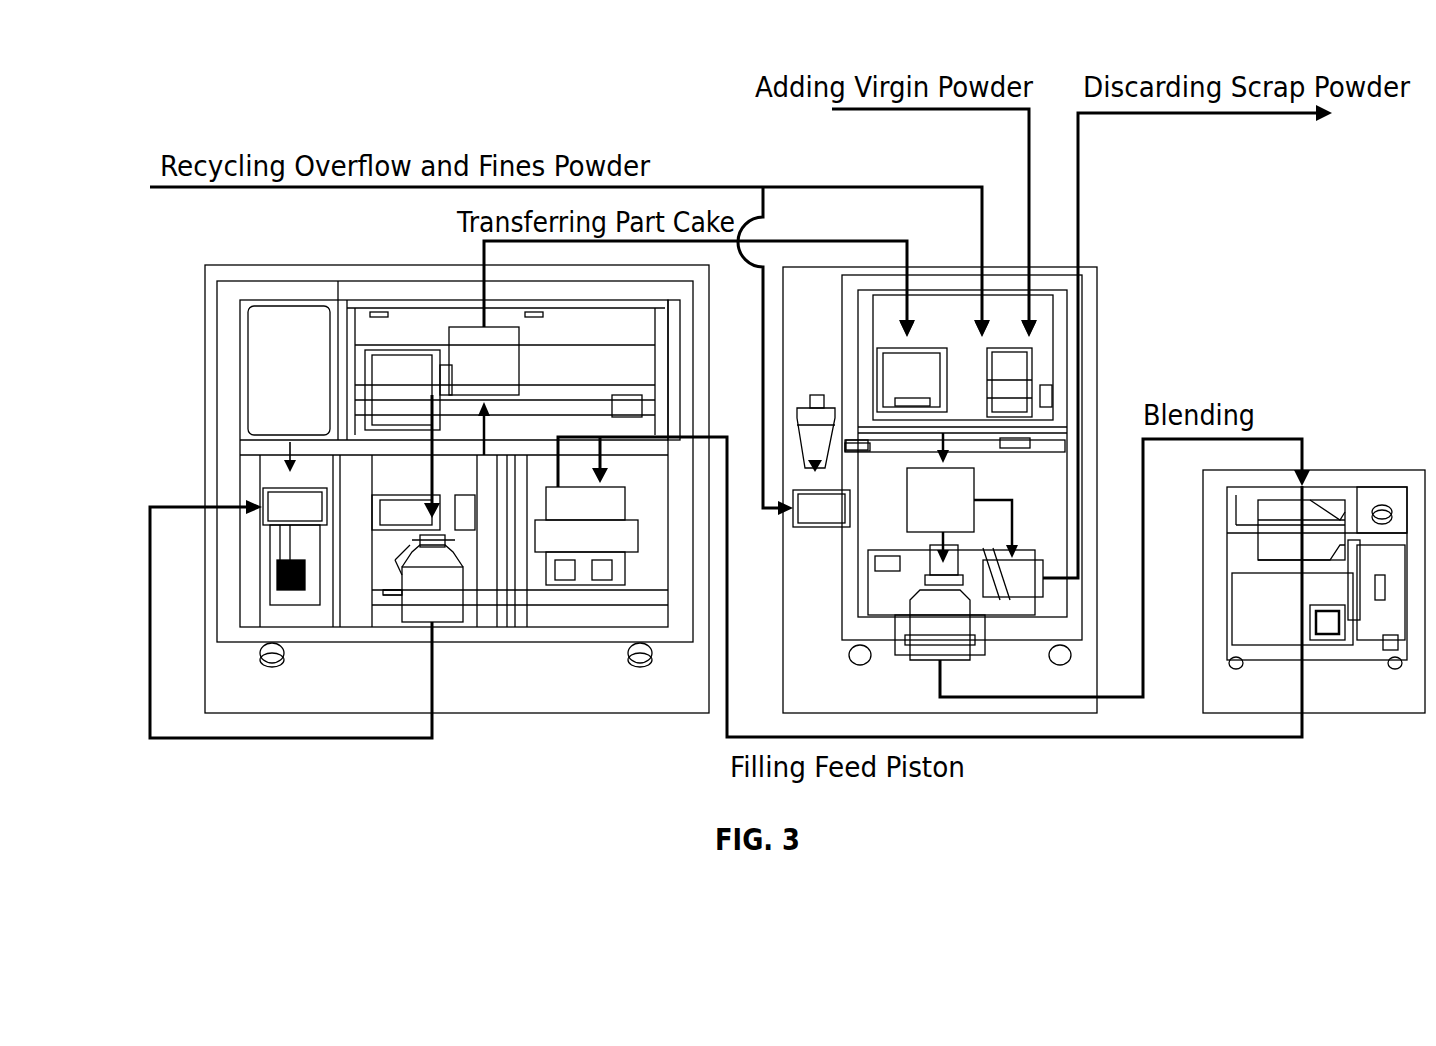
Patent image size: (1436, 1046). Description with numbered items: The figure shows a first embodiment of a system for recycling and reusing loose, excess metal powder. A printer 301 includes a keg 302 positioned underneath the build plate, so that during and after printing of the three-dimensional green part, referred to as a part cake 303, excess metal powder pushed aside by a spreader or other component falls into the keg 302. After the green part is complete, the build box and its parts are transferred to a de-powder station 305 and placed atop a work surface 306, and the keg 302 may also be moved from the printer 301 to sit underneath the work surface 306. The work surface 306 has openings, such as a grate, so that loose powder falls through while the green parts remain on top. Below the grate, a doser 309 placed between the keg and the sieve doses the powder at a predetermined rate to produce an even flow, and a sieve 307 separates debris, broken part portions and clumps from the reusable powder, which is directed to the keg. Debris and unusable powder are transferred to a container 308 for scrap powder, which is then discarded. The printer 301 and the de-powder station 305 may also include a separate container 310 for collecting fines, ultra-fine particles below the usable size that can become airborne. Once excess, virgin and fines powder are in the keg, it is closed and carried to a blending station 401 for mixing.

The printer 301 is at (537, 715).
The keg 302 is at (415, 624).
The part cake 303 is at (468, 325).
The de-powder station 305 is at (1030, 715).
The work surface 306 is at (877, 370).
The sieve 307 is at (975, 498).
The container for scrap powder 308 is at (1043, 565).
The doser 309 is at (835, 440).
The container for collecting fines 310 is at (250, 500).
The blending station 401 is at (1337, 468).